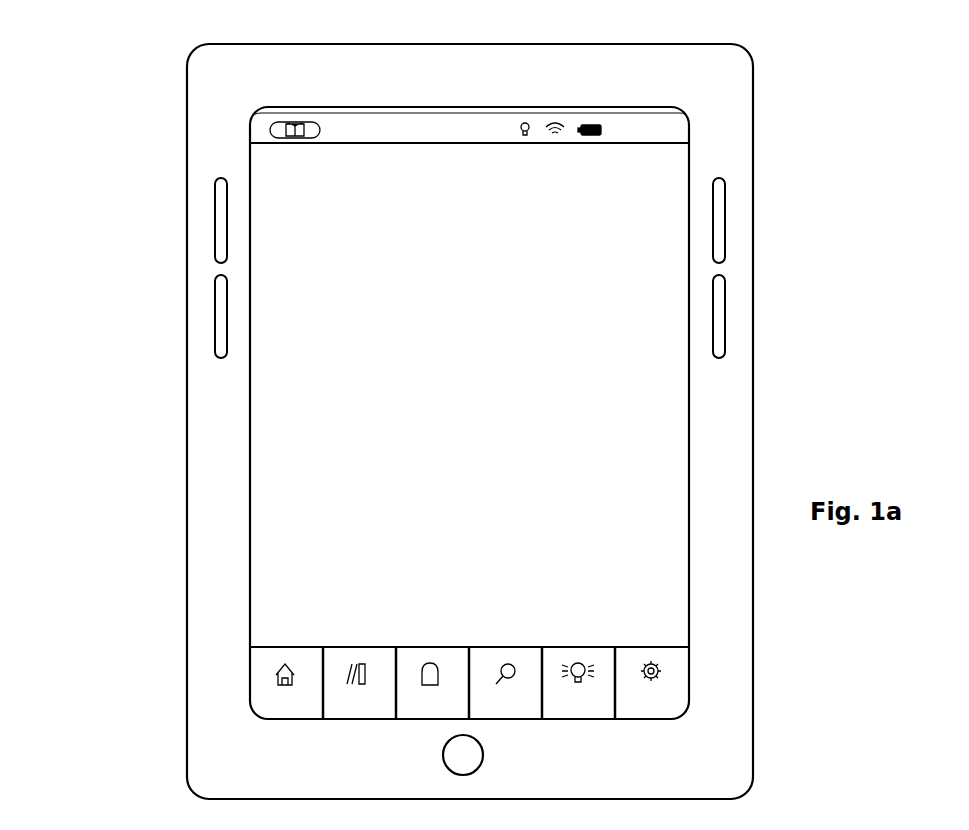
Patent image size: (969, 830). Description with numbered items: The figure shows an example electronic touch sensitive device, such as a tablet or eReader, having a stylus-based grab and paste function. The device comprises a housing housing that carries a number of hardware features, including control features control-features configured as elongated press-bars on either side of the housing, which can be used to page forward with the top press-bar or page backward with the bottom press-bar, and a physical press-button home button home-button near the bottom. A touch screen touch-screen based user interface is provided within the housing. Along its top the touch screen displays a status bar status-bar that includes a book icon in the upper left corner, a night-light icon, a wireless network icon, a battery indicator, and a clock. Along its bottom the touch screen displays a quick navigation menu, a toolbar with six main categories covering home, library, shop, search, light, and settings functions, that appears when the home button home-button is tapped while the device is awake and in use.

The element housing is at (187, 95).
The status bar status-bar is at (502, 112).
The touch screen touch-screen is at (469, 413).
The control features control-features is at (766, 360).
The home button home-button is at (443, 755).